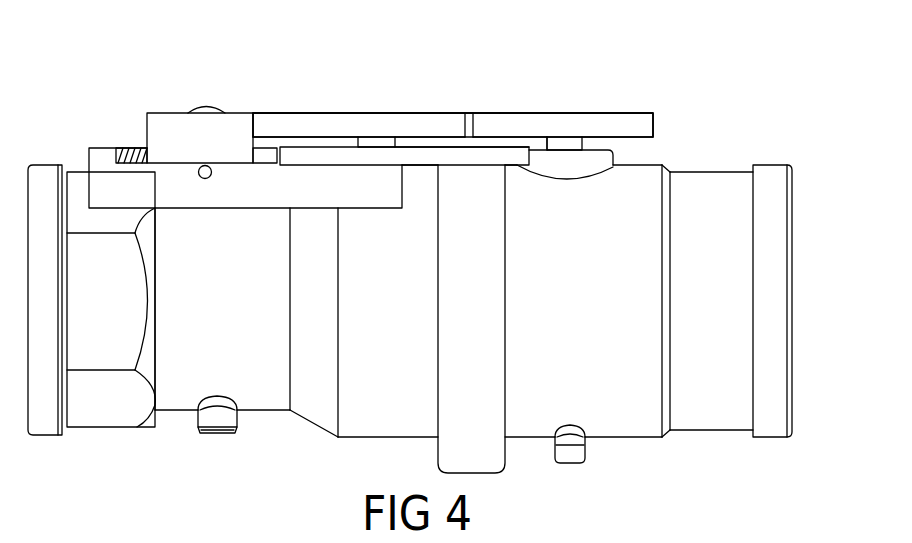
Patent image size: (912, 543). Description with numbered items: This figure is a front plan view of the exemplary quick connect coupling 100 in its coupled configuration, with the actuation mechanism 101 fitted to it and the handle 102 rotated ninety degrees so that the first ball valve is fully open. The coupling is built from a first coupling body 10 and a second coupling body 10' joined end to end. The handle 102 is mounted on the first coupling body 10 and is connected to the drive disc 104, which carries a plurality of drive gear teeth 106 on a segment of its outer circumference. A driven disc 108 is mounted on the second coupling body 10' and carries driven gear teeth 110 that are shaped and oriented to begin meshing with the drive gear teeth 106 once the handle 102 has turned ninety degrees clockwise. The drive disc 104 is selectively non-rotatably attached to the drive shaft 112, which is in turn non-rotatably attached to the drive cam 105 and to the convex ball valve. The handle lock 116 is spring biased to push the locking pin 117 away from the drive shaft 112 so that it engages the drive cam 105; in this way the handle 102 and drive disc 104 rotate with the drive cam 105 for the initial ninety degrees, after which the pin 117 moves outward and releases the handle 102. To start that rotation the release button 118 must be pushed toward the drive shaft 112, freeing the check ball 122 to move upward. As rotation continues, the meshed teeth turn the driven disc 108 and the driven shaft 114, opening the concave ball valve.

The first coupling body 10 is at (183, 314).
The second coupling body 10' is at (565, 324).
The quick connect coupling 100 is at (608, 40).
The actuation mechanism 101 is at (537, 97).
The handle 102 is at (160, 120).
The drive disc 104 is at (443, 122).
The drive cam 105 is at (408, 157).
The drive gear teeth 106 is at (468, 114).
The driven disc 108 is at (633, 125).
The driven gear teeth 110 is at (470, 113).
The drive shaft 112 is at (378, 142).
The driven shaft 114 is at (562, 145).
The handle lock 116 is at (110, 124).
The locking pin 117 is at (267, 158).
The release button 118 is at (203, 110).
The check ball 122 is at (205, 179).